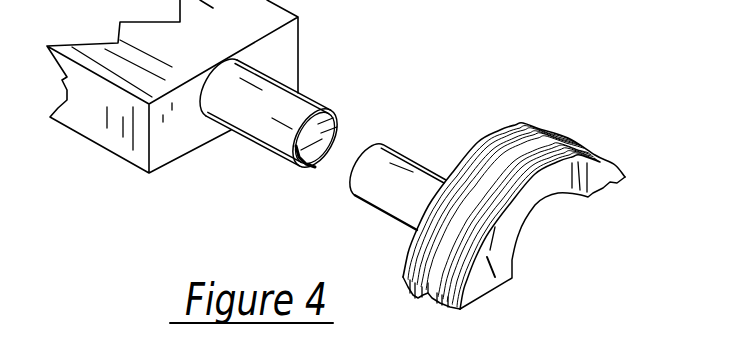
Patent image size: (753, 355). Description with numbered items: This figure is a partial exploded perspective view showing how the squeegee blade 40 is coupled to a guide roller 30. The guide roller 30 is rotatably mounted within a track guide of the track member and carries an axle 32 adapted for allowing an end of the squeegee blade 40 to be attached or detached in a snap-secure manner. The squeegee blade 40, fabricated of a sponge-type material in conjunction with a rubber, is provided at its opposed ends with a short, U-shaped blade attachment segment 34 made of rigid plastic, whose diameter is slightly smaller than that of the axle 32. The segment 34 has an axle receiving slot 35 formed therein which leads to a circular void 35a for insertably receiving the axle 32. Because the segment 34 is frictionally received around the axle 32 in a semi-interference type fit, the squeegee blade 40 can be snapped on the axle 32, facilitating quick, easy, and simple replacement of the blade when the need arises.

The guide roller 30 is at (568, 139).
The axle 32 is at (382, 188).
The U-shaped blade attachment segment 34 is at (302, 92).
The axle receiving slot 35 is at (318, 160).
The circular void 35a is at (320, 132).
The squeegee blade 40 is at (178, 132).